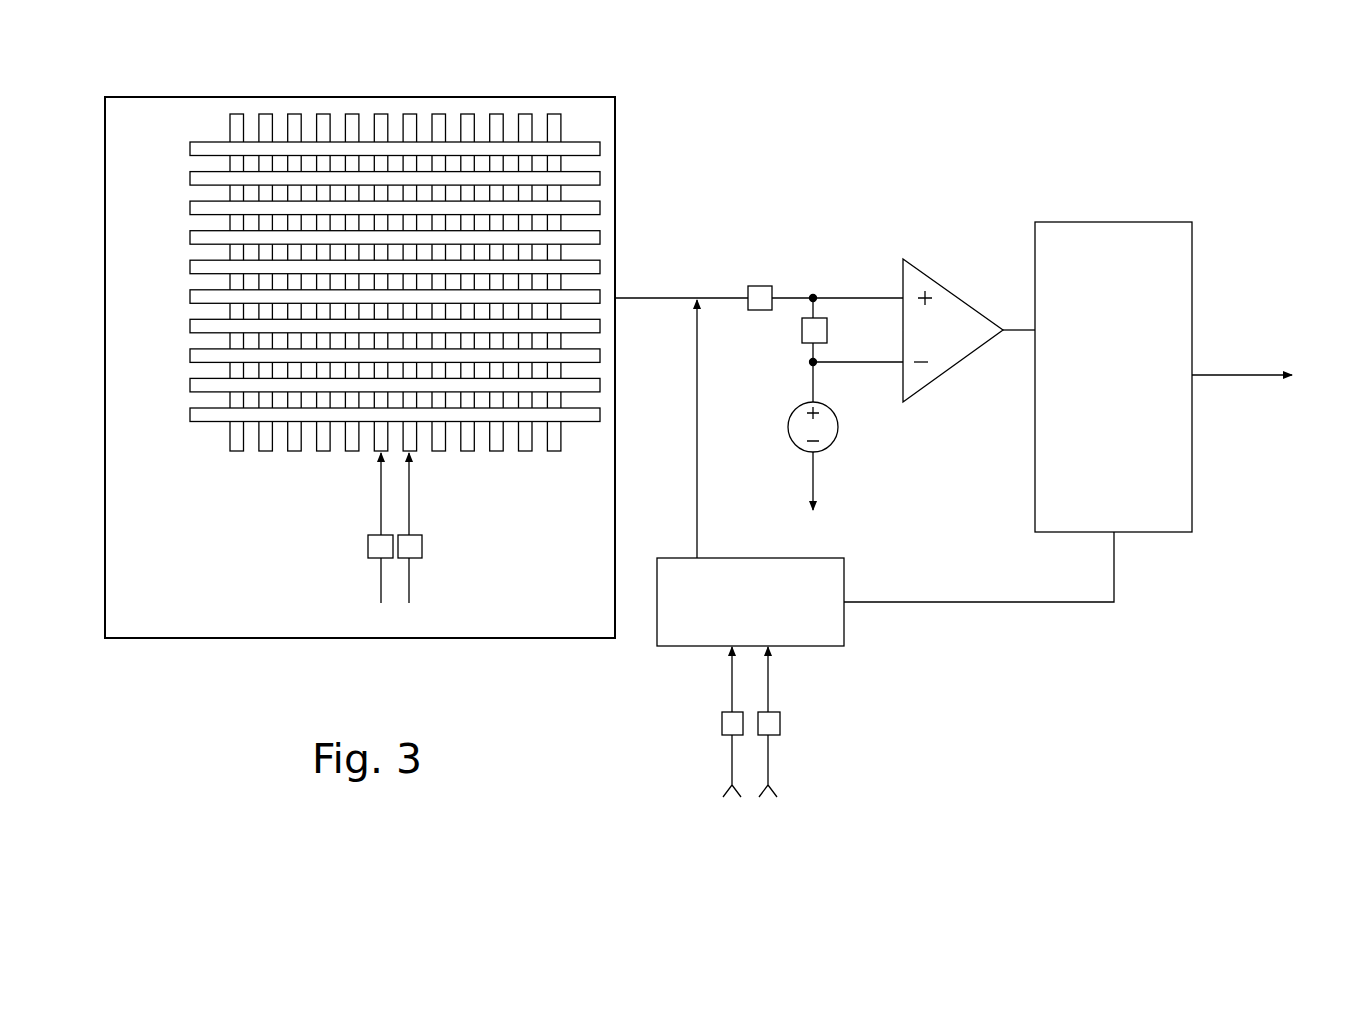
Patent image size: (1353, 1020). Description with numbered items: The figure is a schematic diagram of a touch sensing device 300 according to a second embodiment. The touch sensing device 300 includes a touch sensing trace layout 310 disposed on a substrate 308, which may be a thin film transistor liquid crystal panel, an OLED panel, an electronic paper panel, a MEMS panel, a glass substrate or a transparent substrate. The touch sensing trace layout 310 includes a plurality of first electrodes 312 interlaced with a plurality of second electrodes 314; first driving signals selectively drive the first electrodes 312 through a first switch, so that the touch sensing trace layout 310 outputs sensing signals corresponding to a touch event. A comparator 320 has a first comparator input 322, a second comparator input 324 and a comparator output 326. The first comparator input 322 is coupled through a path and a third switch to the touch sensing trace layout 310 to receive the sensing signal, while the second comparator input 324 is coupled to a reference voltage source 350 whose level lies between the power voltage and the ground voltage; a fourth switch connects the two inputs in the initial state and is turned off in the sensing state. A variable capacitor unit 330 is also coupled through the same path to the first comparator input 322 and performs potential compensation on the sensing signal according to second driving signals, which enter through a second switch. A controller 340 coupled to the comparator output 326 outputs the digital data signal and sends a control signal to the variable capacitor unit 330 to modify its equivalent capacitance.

The touch sensing device 300 is at (757, 78).
The substrate 308 is at (185, 640).
The touch sensing trace layout 310 is at (397, 239).
The first electrodes 312 is at (237, 113).
The second electrodes 314 is at (583, 142).
The comparator 320 is at (931, 330).
The first comparator input 322 is at (900, 297).
The second comparator input 324 is at (902, 372).
The comparator output 326 is at (1003, 333).
The variable capacitor unit 330 is at (815, 556).
The controller 340 is at (1135, 410).
The reference voltage source 350 is at (828, 448).